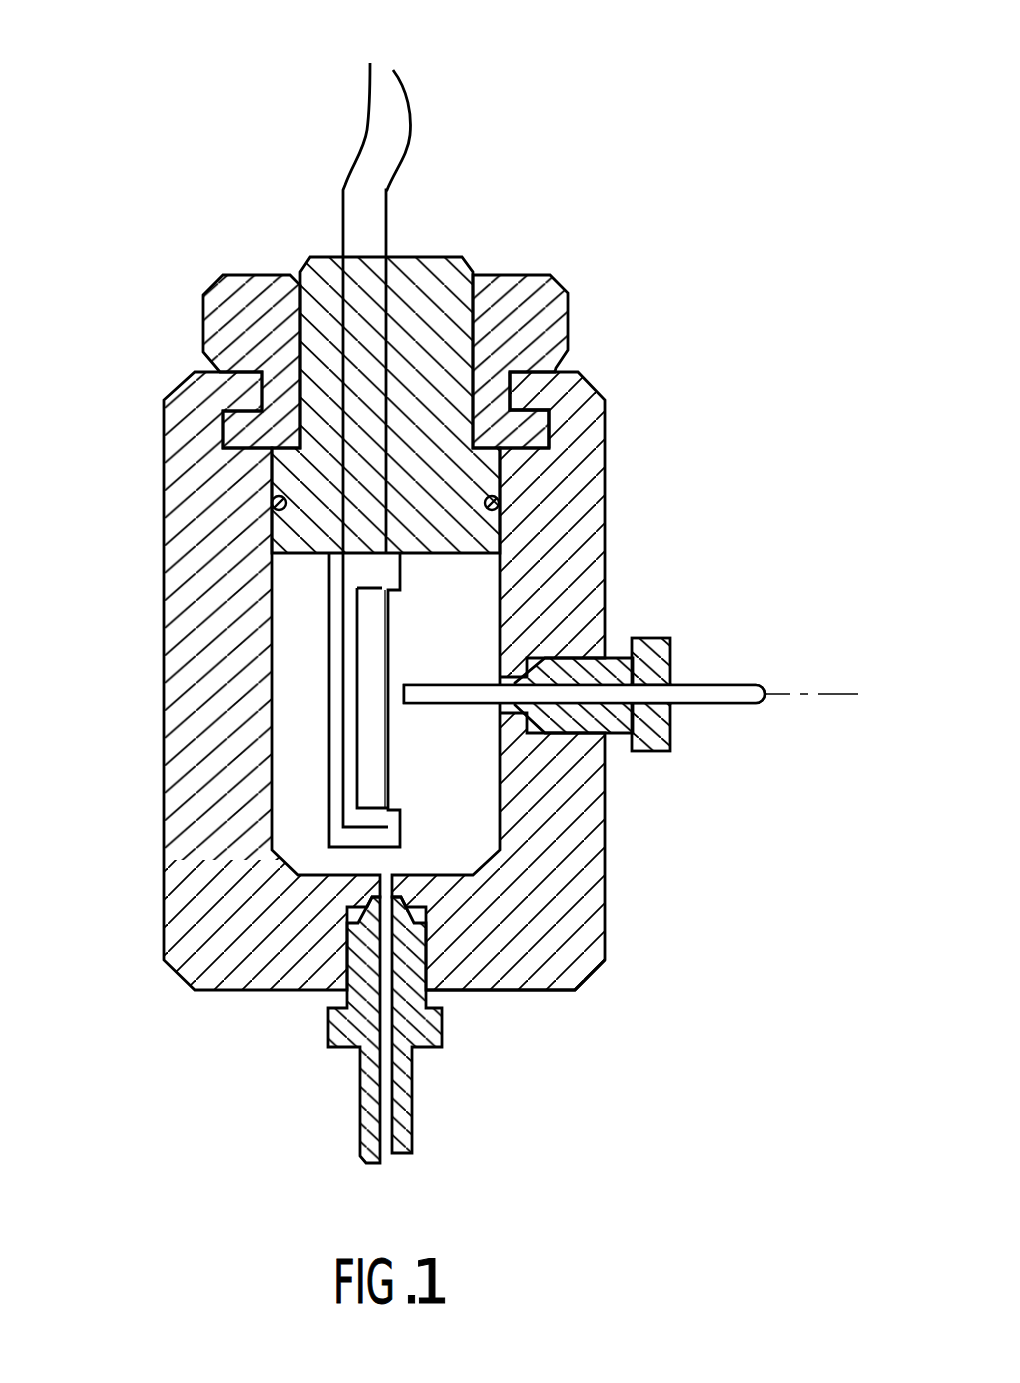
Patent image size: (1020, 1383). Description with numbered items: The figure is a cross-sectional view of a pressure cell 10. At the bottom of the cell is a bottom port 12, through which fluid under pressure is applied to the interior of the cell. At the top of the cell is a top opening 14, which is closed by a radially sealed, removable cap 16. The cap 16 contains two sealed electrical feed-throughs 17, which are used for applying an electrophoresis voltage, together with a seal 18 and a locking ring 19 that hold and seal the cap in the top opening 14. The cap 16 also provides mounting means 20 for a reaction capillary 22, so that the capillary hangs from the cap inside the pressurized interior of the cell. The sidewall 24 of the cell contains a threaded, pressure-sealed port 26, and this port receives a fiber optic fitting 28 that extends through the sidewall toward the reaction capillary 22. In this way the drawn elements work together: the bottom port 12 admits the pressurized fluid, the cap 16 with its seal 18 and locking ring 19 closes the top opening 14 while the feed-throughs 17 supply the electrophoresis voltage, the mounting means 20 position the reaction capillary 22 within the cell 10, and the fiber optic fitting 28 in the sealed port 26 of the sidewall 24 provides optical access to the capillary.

The pressure cell 10 is at (597, 392).
The bottom port 12 is at (443, 1035).
The top opening 14 is at (512, 392).
The removable cap 16 is at (427, 257).
The sealed electrical feed-throughs 17 is at (376, 285).
The seal 18 is at (505, 508).
The locking ring 19 is at (520, 275).
The mounting means 20 is at (363, 572).
The reaction capillary 22 is at (393, 668).
The sidewall 24 is at (605, 903).
The pressure-sealed port 26 is at (618, 747).
The fiber optic fitting 28 is at (655, 637).